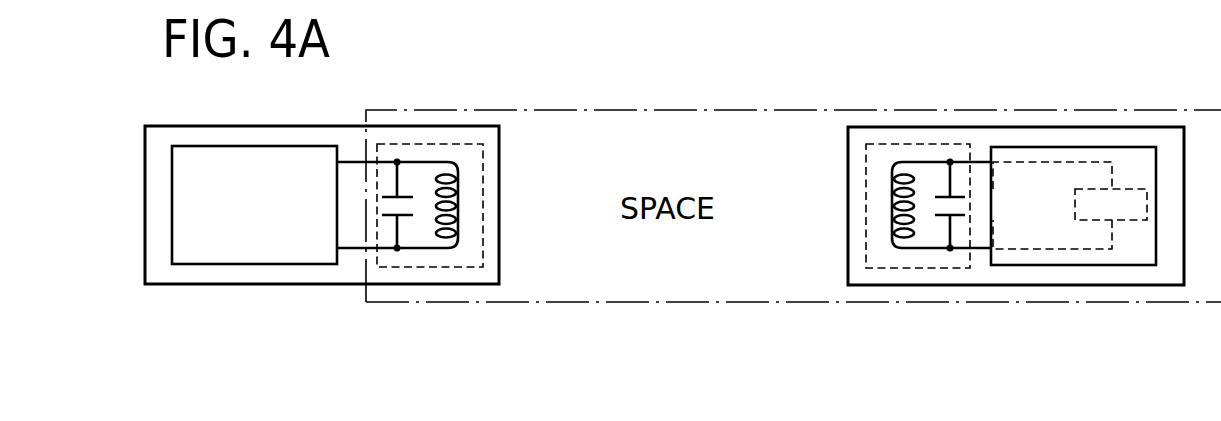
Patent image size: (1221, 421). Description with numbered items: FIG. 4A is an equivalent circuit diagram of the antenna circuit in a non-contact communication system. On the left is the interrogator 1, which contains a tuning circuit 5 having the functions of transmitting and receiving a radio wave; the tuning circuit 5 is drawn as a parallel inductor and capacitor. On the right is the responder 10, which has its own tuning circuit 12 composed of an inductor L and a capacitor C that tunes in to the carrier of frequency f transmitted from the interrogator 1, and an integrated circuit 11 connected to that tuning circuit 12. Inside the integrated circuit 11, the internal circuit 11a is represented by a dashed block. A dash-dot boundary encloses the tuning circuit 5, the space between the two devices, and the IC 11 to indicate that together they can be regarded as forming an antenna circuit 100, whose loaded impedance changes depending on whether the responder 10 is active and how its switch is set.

The interrogator 1 is at (293, 285).
The tuning circuit 5 is at (442, 268).
The antenna circuit 100 is at (670, 110).
The responder 10 is at (989, 285).
The integrated circuit 11 is at (1063, 265).
The internal circuit 11a is at (1132, 189).
The tuning circuit 12 is at (917, 268).